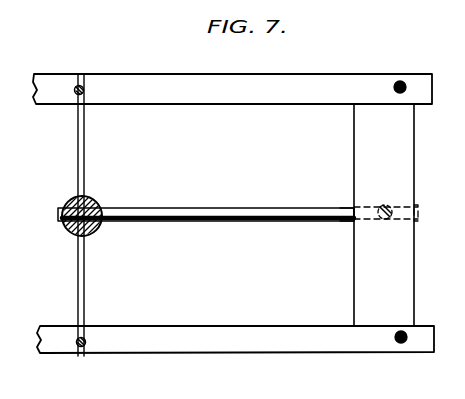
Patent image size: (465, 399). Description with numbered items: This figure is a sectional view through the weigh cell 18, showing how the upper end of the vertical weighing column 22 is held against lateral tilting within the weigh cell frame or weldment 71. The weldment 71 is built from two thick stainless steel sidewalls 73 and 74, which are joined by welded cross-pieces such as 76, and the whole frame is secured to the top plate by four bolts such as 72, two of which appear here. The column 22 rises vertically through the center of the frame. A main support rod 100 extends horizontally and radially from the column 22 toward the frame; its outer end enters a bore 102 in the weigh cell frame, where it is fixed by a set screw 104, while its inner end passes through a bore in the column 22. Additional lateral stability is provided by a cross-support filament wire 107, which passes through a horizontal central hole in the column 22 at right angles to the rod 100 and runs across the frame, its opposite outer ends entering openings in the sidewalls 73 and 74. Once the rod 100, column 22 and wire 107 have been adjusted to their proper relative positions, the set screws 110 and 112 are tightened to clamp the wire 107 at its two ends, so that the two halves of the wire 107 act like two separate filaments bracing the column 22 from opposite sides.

The weigh cell 18 is at (236, 355).
The vertical weighing column 22 is at (95, 200).
The weigh cell frame or weldment 71 is at (350, 56).
The bolt 72 is at (402, 83).
The sidewall 73 is at (264, 103).
The sidewall 74 is at (217, 330).
The cross-piece 76 is at (407, 163).
The main support rod 100 is at (254, 209).
The bore 102 is at (350, 219).
The set screw 104 is at (389, 218).
The cross-support filament wire 107 is at (80, 145).
The set screw 110 is at (84, 88).
The set screw 112 is at (78, 345).